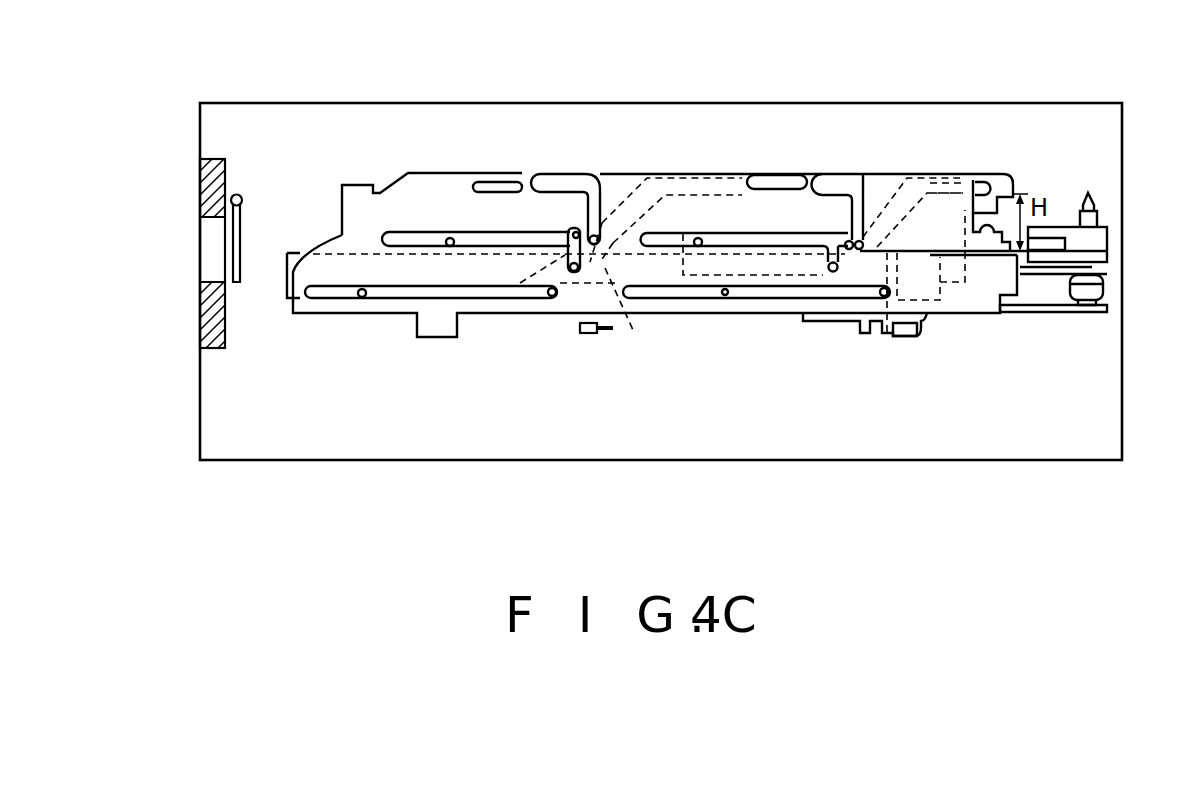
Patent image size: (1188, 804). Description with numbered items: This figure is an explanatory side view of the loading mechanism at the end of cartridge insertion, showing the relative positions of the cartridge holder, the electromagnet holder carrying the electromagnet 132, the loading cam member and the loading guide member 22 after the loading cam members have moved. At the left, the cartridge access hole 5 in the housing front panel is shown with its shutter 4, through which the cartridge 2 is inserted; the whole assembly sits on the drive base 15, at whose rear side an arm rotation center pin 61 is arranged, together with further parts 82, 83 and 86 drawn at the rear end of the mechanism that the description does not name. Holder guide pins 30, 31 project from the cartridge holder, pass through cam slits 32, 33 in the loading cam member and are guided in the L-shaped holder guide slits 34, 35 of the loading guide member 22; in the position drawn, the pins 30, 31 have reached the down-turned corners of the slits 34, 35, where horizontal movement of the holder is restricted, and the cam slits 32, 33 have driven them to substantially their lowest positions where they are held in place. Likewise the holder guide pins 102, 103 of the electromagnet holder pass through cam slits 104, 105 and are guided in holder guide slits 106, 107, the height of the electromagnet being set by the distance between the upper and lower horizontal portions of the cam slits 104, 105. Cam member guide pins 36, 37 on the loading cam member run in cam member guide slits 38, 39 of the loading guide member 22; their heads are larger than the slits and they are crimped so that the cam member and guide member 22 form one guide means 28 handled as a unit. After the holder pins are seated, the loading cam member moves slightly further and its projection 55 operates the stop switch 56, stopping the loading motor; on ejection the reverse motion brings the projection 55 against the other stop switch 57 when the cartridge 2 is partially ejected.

The cartridge 2 is at (908, 336).
The shutter 4 is at (242, 224).
The cartridge access hole 5 is at (214, 281).
The drive base 15 is at (1030, 313).
The loading guide member 22 is at (973, 297).
The guide means 28 is at (663, 310).
The holder guide pin 30 is at (573, 272).
The holder guide pin 31 is at (829, 270).
The cam slit 32 is at (633, 330).
The cam slit 33 is at (887, 333).
The holder guide slit 34 is at (450, 246).
The holder guide slit 35 is at (697, 246).
The cam member guide pin 36 is at (550, 296).
The cam member guide pin 37 is at (883, 296).
The cam member guide slit 38 is at (362, 297).
The cam member guide slit 39 is at (725, 296).
The projection 55 is at (868, 335).
The stop switch 56 is at (922, 300).
The stop switch 57 is at (590, 333).
The arm rotation center pin 61 is at (1088, 305).
The block 82 is at (1097, 250).
The pin 83 is at (1097, 212).
The rod 86 is at (1048, 275).
The holder guide pin 102 is at (578, 226).
The holder guide pin 103 is at (863, 238).
The cam slit 104 is at (637, 192).
The cam slit 105 is at (890, 195).
The holder guide slit 106 is at (511, 181).
The holder guide slit 107 is at (786, 178).
The electromagnet 132 is at (755, 276).